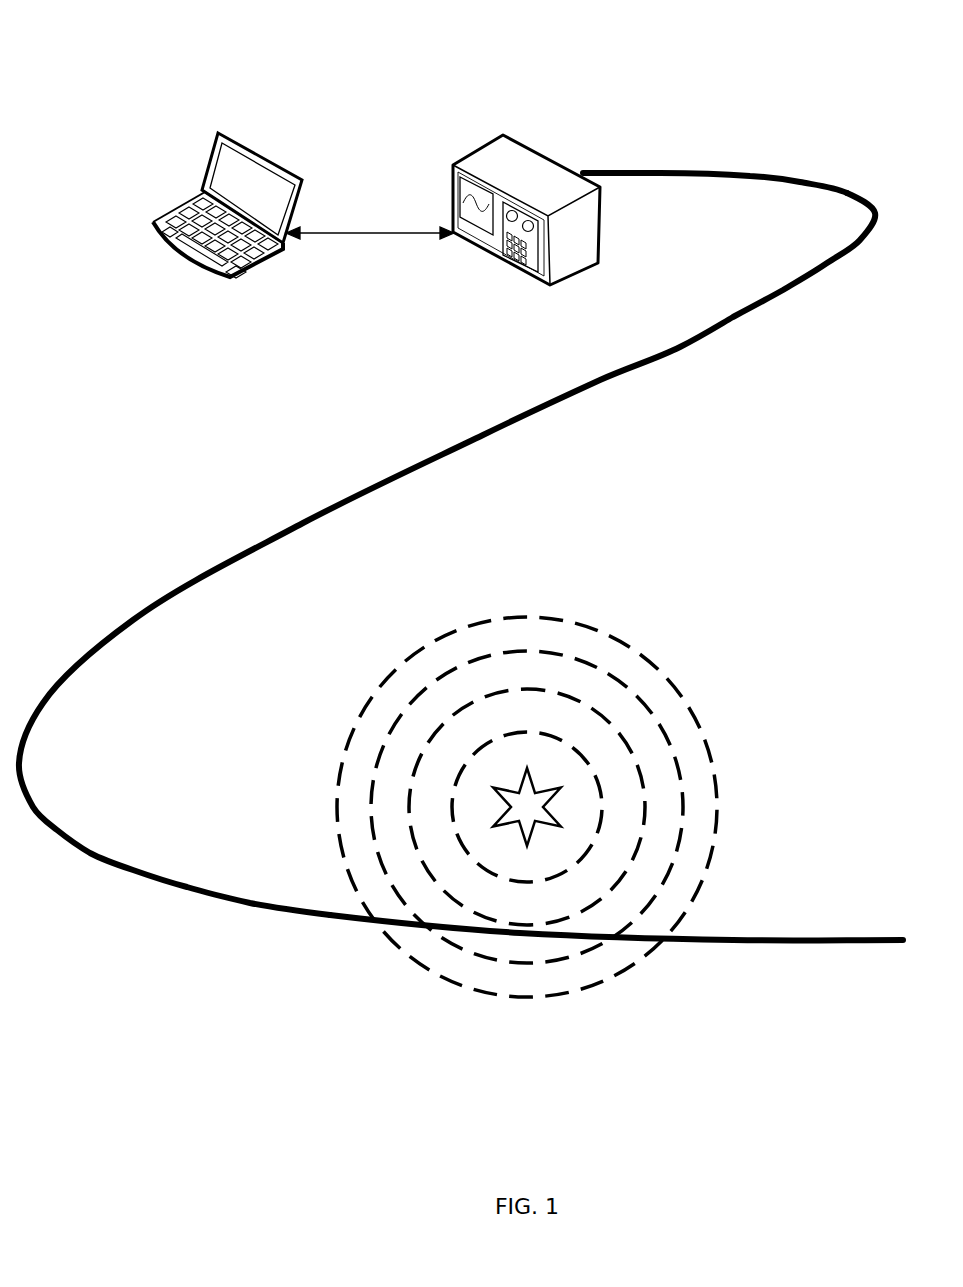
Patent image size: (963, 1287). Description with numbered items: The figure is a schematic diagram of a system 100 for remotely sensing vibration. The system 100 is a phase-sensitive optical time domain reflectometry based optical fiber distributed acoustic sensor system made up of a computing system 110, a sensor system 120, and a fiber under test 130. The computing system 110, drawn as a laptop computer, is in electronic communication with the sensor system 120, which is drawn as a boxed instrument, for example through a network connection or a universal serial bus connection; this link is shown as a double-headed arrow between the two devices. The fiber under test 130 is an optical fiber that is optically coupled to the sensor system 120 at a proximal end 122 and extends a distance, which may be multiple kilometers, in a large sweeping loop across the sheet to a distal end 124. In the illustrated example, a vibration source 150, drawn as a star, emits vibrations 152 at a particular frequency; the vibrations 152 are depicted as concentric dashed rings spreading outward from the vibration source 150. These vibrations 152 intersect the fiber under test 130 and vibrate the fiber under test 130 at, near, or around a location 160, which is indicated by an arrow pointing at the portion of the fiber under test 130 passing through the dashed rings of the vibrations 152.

The system 100 is at (108, 53).
The computing system 110 is at (172, 253).
The sensor system 120 is at (490, 256).
The proximal end 122 is at (588, 175).
The distal end 124 is at (897, 945).
The fiber under test 130 is at (682, 350).
The vibration source 150 is at (560, 792).
The vibrations 152 is at (715, 808).
The location 160 is at (521, 938).